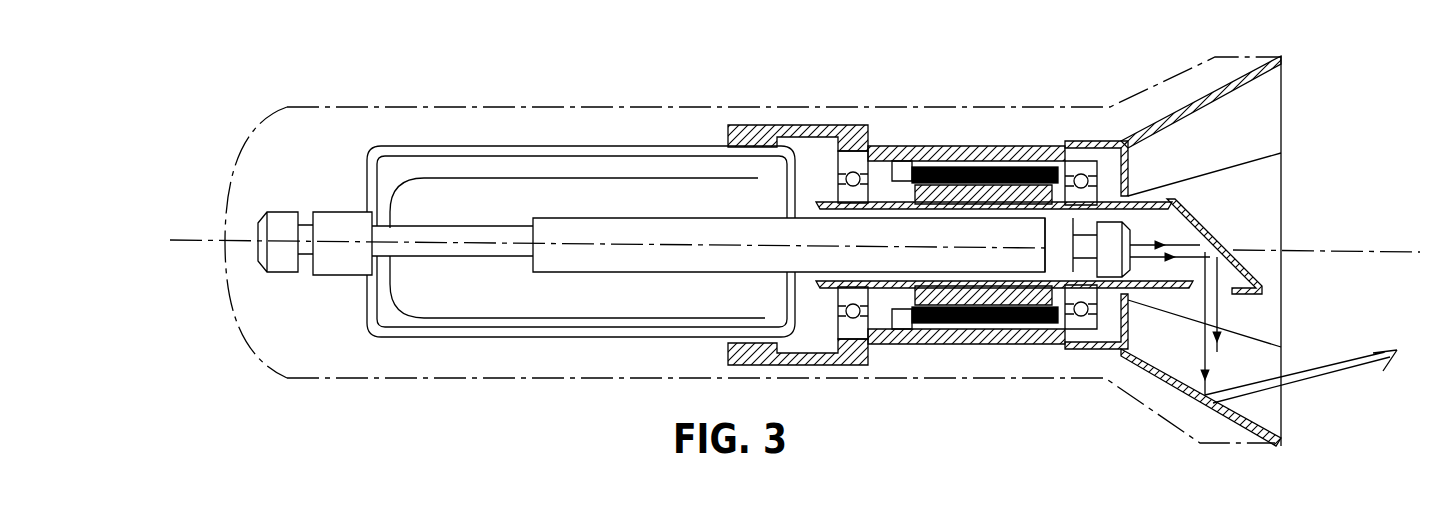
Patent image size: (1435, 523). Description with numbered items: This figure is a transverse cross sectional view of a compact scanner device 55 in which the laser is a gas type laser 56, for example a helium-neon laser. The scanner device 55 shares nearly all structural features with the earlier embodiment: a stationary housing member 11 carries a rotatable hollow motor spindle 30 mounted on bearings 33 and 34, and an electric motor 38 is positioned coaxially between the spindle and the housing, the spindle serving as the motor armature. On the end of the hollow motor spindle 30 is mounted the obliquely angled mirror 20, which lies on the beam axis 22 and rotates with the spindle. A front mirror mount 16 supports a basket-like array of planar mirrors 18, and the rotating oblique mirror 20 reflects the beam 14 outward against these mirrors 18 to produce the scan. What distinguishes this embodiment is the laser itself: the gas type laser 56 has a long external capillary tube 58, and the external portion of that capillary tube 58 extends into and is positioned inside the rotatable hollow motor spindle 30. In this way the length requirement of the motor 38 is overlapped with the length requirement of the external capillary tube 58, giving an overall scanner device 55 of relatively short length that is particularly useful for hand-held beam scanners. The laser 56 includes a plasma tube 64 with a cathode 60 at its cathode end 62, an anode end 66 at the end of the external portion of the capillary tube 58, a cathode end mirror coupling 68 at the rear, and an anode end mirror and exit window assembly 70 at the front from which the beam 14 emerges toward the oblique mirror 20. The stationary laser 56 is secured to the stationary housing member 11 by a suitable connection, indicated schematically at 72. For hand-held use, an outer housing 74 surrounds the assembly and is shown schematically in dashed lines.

The housing member 11 is at (948, 146).
The beam 14 is at (1328, 368).
The front mirror mount 16 is at (1177, 112).
The planar mirrors 18 is at (1262, 74).
The obliquely angled mirror 20 is at (1222, 250).
The beam axis 22 is at (183, 242).
The hollow motor spindle 30 is at (1112, 290).
The bearing 33 is at (1082, 174).
The bearing 34 is at (858, 175).
The electric motor 38 is at (1008, 167).
The scanner device 55 is at (757, 100).
The gas type laser 56 is at (572, 138).
The external capillary tube 58 is at (670, 218).
The cathode 60 is at (420, 146).
The cathode end 62 is at (358, 149).
The plasma tube 64 is at (501, 146).
The anode end 66 is at (1058, 262).
The cathode end mirror coupling 68 is at (283, 222).
The anode end mirror and exit window assembly 70 is at (1110, 235).
The connection 72 is at (836, 125).
The outer housing 74 is at (645, 378).